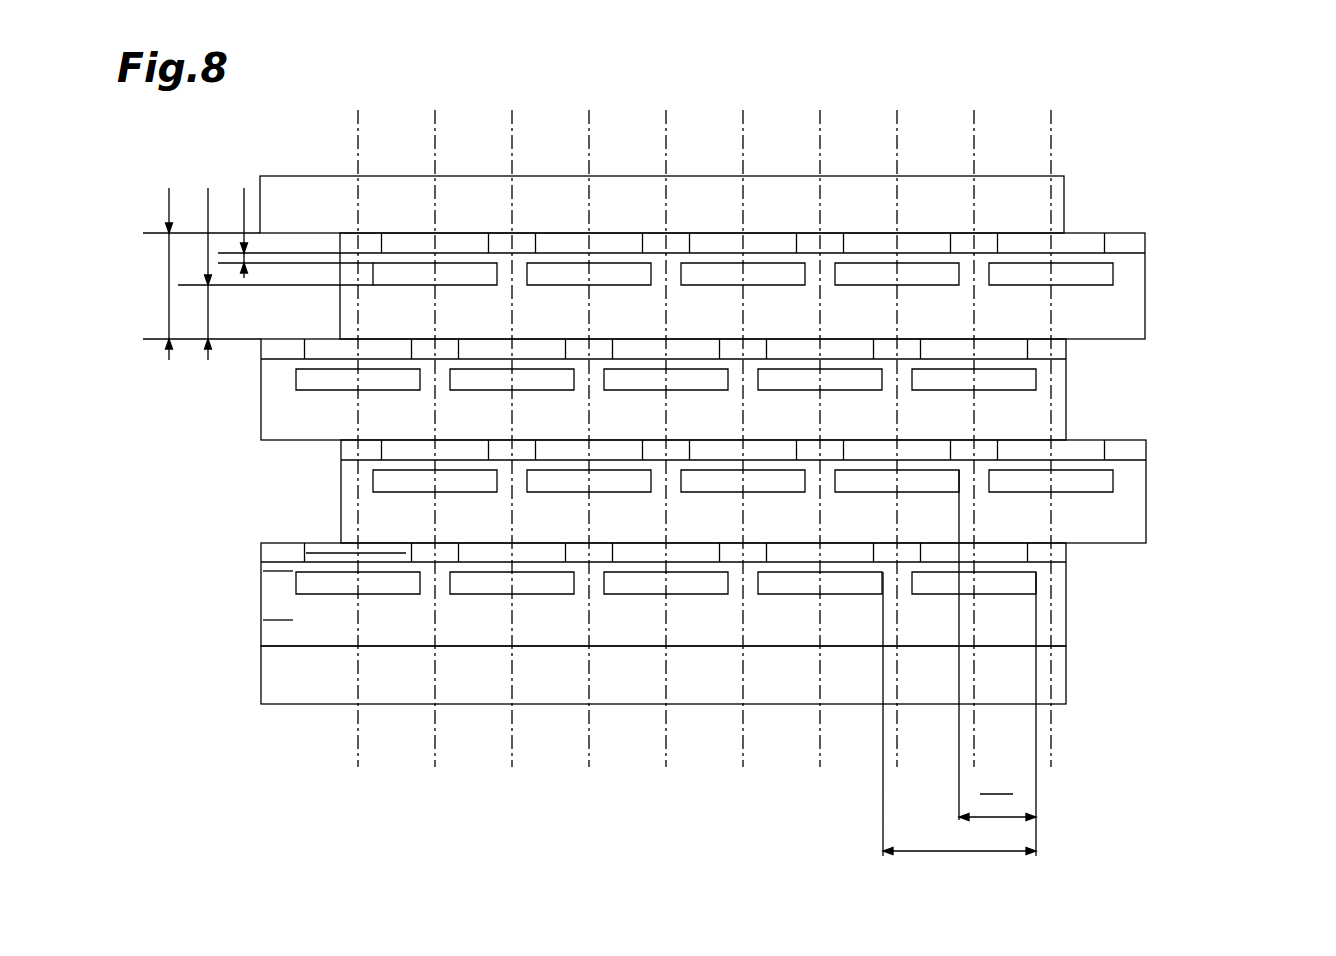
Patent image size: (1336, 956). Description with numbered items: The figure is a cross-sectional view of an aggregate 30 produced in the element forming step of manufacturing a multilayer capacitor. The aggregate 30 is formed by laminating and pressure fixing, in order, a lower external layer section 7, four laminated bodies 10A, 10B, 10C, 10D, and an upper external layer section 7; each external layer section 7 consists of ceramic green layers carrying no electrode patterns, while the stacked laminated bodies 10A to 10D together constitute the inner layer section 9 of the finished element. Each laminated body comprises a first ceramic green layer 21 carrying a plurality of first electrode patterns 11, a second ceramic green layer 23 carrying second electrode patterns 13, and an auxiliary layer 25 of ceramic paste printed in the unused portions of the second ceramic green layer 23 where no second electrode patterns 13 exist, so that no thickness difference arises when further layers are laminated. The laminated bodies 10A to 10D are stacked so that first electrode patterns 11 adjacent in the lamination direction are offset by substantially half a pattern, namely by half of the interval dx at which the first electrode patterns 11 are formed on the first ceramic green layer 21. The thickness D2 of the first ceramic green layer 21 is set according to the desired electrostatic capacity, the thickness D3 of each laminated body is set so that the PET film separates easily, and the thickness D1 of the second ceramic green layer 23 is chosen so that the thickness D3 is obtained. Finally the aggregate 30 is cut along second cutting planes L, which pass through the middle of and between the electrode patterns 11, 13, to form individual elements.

The external layer section 7 is at (1064, 200).
The inner layer section 9 is at (726, 448).
The laminated body 10A is at (706, 570).
The laminated body 10B is at (1146, 523).
The laminated body 10C is at (1067, 413).
The laminated body 10D is at (1145, 302).
The first electrode pattern 11 is at (310, 585).
The second electrode pattern 13 is at (313, 550).
The first ceramic green layer 21 is at (273, 630).
The second ceramic green layer 23 is at (265, 570).
The auxiliary layer 25 is at (425, 548).
The aggregate 30 is at (755, 440).
The second cutting plane L is at (1052, 145).
The thickness of the second ceramic green layer D1 is at (293, 233).
The thickness of the first ceramic green layer D2 is at (274, 274).
The thickness of the laminated body D3 is at (197, 274).
The interval of forming of the first electrode patterns dx is at (959, 663).